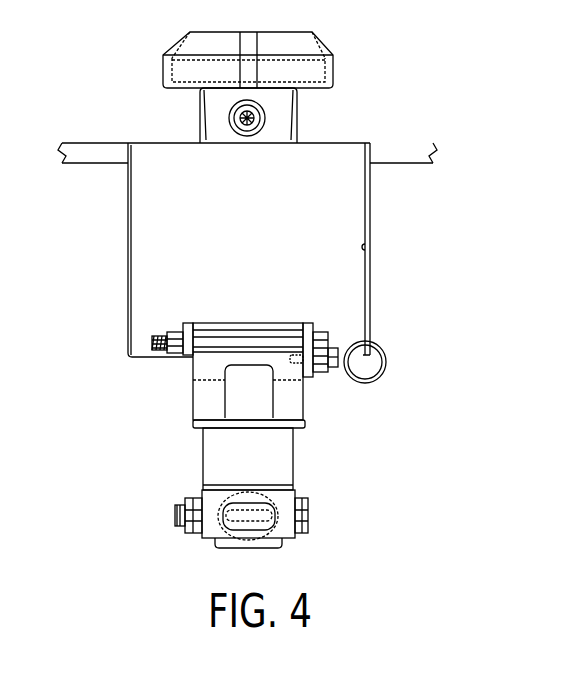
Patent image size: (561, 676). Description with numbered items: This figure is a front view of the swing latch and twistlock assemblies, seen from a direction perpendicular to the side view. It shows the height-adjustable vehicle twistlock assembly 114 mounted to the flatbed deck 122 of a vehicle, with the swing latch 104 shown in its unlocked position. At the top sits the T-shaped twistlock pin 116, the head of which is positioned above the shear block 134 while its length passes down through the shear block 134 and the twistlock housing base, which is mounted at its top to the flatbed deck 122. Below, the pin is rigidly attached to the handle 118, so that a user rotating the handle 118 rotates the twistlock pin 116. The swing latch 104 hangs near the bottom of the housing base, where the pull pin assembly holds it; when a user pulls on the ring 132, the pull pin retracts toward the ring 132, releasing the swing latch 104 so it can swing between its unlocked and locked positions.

The swing latch 104 is at (193, 395).
The height-adjustable vehicle twistlock assembly 114 is at (384, 64).
The T-shaped twistlock pin 116 is at (172, 45).
The handle 118 is at (262, 523).
The flatbed deck 122 is at (98, 146).
The ring 132 is at (365, 383).
The shear block 134 is at (297, 122).